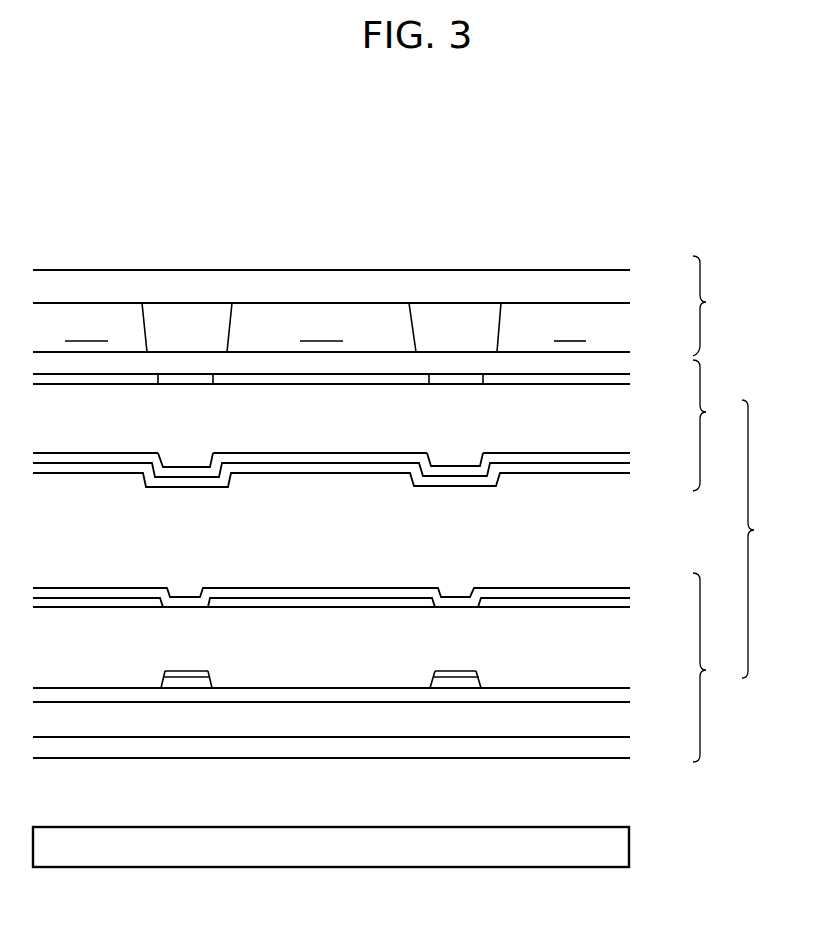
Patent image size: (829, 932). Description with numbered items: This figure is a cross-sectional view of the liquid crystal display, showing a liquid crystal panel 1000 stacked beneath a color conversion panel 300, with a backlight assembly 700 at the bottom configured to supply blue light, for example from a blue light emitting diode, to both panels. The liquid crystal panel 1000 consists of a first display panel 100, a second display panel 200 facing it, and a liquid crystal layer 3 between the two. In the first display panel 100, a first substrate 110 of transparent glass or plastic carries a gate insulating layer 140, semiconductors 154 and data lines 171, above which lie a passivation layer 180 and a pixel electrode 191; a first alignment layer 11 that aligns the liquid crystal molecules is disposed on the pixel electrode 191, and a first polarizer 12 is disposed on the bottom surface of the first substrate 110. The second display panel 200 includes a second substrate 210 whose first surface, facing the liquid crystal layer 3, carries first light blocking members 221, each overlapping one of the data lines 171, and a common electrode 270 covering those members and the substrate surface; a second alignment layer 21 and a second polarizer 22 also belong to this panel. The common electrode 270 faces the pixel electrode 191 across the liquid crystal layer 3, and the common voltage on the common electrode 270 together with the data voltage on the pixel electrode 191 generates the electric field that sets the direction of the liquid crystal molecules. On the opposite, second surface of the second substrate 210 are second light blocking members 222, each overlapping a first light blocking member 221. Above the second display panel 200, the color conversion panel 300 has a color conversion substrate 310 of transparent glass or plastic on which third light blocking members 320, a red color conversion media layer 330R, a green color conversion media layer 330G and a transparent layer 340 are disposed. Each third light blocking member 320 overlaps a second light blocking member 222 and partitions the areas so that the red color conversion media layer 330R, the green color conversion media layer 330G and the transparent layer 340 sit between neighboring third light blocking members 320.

The liquid crystal layer 3 is at (620, 540).
The first alignment layer 11 is at (622, 592).
The first polarizer 12 is at (620, 751).
The second alignment layer 21 is at (622, 468).
The second polarizer 22 is at (620, 368).
The first display panel 100 is at (716, 667).
The first substrate 110 is at (620, 721).
The gate insulating layer 140 is at (620, 698).
The semiconductors 154 is at (440, 778).
The data lines 171 is at (492, 778).
The passivation layer 180 is at (620, 656).
The pixel electrode 191 is at (622, 603).
The second display panel 200 is at (716, 425).
The second substrate 210 is at (616, 417).
The first light blocking members 221 is at (452, 518).
The second light blocking members 222 is at (442, 380).
The common electrode 270 is at (622, 458).
The color conversion panel 300 is at (716, 306).
The color conversion substrate 310 is at (616, 291).
The third light blocking members 320 is at (466, 328).
The red color conversion media layer 330R is at (87, 326).
The green color conversion media layer 330G is at (322, 326).
The transparent layer 340 is at (570, 326).
The backlight assembly 700 is at (620, 848).
The liquid crystal panel 1000 is at (771, 539).